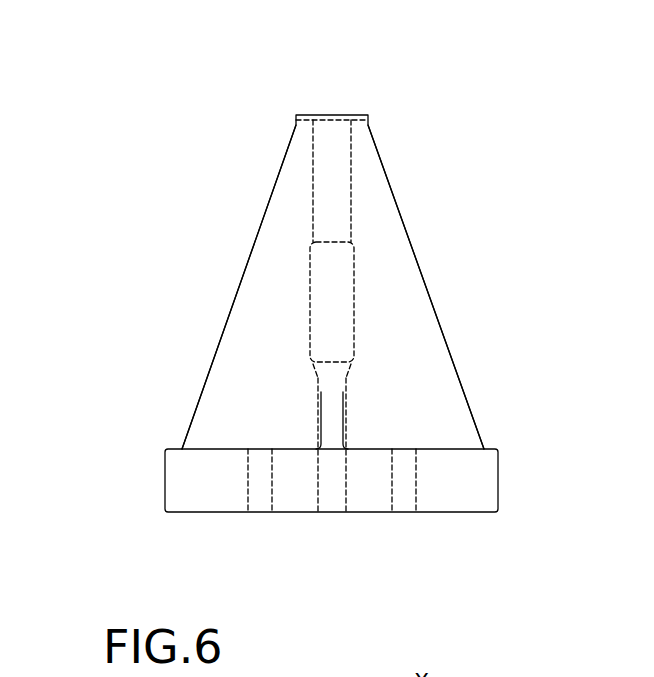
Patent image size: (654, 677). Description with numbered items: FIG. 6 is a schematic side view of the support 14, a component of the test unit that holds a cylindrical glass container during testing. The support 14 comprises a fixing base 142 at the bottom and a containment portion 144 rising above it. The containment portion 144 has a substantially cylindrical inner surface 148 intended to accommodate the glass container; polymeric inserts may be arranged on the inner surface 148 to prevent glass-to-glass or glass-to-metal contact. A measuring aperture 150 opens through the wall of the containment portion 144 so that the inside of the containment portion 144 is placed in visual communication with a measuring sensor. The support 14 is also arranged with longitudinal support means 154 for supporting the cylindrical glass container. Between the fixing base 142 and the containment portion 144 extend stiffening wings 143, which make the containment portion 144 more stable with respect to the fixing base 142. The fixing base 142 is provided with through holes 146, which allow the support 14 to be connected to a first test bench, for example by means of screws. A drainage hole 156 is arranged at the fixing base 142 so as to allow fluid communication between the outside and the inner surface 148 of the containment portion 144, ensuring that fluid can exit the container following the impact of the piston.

The support 14 is at (458, 364).
The fixing base 142 is at (506, 488).
The stiffening wings 143 is at (240, 400).
The containment portion 144 is at (359, 193).
The through holes 146 is at (259, 516).
The inner surface 148 is at (313, 162).
The measuring aperture 150 is at (320, 295).
The longitudinal support means 154 is at (353, 111).
The drainage hole 156 is at (328, 516).